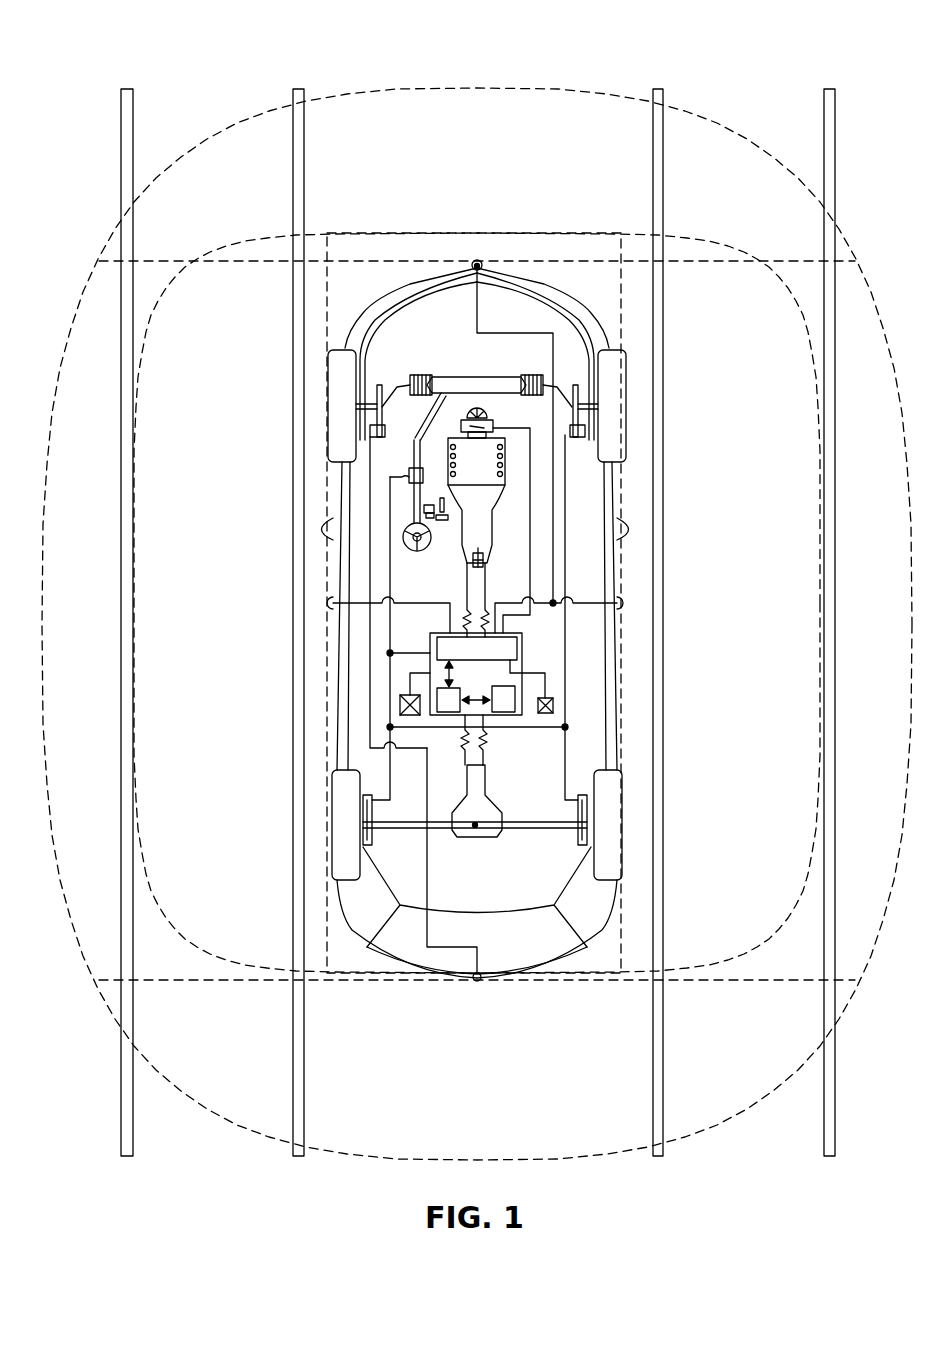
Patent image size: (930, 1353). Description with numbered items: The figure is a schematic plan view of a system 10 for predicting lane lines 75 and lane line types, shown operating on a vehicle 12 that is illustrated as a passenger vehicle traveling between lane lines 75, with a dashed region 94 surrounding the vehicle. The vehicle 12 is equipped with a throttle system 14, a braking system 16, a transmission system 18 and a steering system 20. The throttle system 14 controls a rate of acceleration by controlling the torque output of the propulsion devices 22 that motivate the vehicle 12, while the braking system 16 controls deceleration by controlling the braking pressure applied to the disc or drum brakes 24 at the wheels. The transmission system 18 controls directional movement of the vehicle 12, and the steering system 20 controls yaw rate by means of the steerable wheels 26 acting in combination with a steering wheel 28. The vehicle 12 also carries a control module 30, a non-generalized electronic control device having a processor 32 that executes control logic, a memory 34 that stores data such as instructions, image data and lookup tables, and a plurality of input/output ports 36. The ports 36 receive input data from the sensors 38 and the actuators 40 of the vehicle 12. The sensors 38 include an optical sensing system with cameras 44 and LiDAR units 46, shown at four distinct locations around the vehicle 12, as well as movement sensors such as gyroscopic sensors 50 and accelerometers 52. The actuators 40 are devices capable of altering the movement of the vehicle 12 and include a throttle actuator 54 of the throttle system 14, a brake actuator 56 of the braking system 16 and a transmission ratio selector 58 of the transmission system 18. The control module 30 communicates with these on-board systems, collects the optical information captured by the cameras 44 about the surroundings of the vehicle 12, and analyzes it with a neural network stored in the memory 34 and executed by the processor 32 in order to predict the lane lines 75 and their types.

The system 10 is at (798, 38).
The vehicle 12 is at (572, 293).
The throttle system 14 is at (340, 572).
The braking system 16 is at (309, 491).
The transmission system 18 is at (593, 484).
The steering system 20 is at (457, 368).
The propulsion devices 22 is at (489, 475).
The disc or drum brakes 24 is at (368, 430).
The steerable wheels 26 is at (342, 358).
The steering wheel 28 is at (270, 605).
The control module 30 is at (483, 648).
The processor 32 is at (455, 713).
The memory 34 is at (507, 713).
The input/output ports 36 is at (523, 640).
The sensors 38 is at (471, 607).
The actuators 40 is at (309, 491).
The cameras 44 is at (477, 260).
The LiDAR units 46 is at (407, 480).
The gyroscopic sensors 50 is at (403, 706).
The accelerometers 52 is at (553, 700).
The throttle actuator 54 is at (485, 415).
The brake actuator 56 is at (309, 491).
The transmission ratio selector 58 is at (495, 560).
The lane lines 75 is at (127, 89).
The sensing region 94 is at (540, 96).